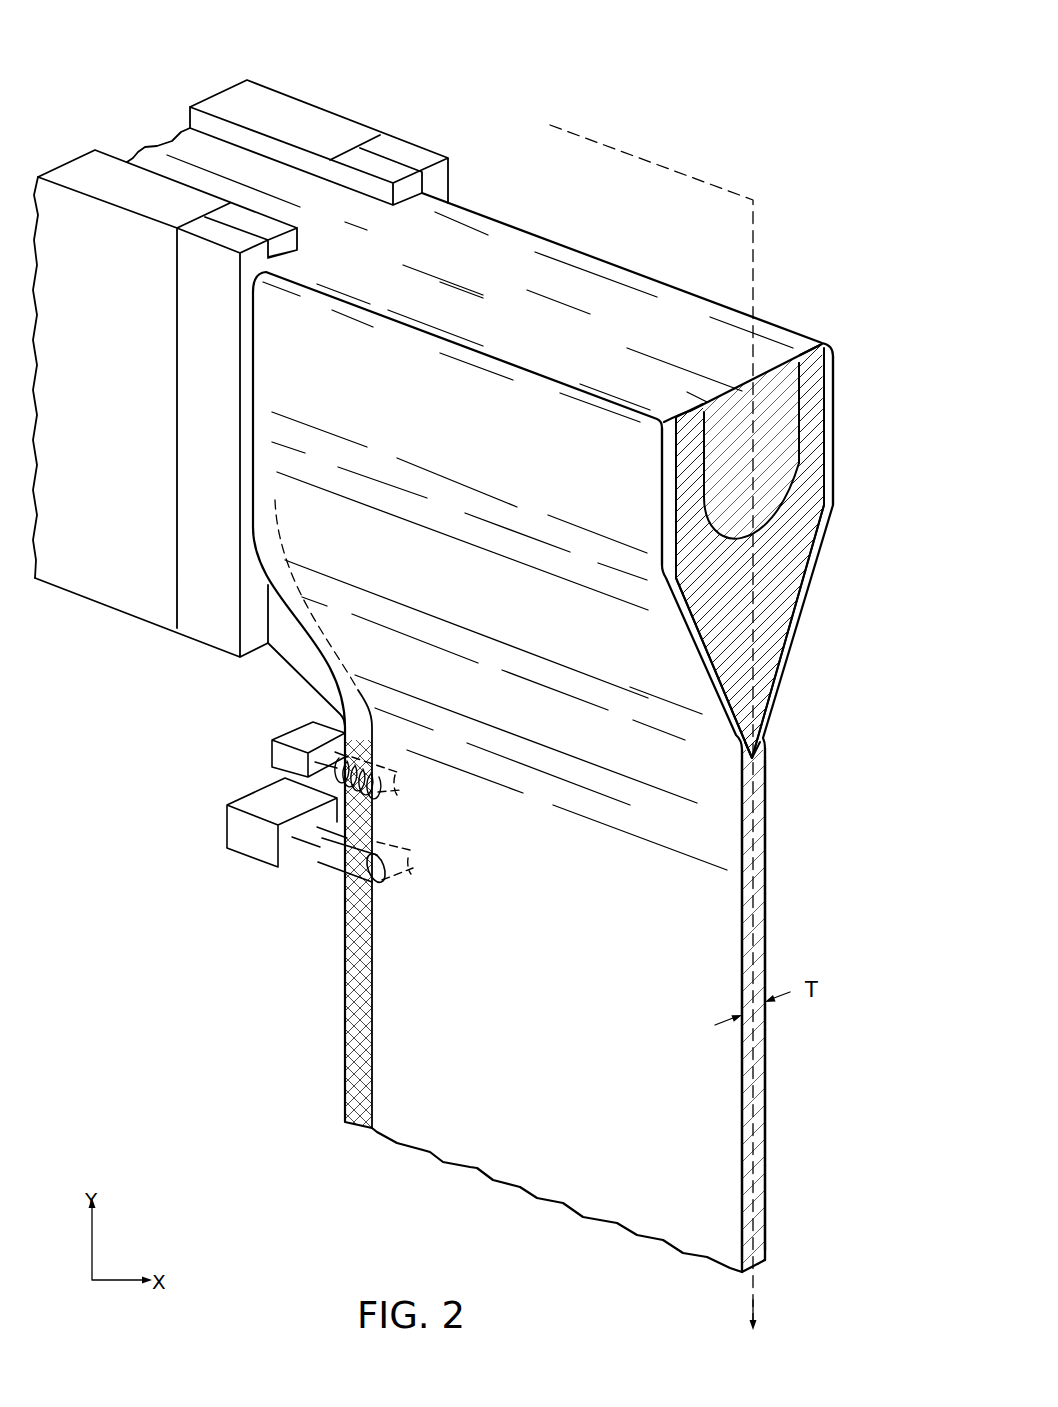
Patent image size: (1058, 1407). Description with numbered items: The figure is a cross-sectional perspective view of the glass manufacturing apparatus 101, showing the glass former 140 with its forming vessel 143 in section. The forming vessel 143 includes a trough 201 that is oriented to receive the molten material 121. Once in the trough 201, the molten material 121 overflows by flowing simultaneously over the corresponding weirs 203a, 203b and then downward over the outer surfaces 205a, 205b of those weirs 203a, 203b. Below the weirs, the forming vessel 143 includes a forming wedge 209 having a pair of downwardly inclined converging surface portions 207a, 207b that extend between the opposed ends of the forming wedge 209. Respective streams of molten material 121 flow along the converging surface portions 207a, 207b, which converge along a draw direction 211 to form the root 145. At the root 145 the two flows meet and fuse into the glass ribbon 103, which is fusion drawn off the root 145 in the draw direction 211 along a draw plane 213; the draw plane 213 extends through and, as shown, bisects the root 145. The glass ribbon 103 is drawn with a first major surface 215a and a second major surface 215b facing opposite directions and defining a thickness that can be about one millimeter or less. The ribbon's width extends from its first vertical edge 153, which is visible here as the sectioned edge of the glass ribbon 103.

The glass manufacturing apparatus 101 is at (832, 95).
The glass former 140 is at (858, 168).
The forming vessel 143 is at (808, 285).
The draw plane 213 is at (753, 220).
The weir 203a is at (690, 423).
The weir 203b is at (807, 367).
The outer surface 205a is at (673, 487).
The outer surface 205b is at (832, 407).
The molten material 121 is at (787, 425).
The trough 201 is at (790, 460).
The forming wedge 209 is at (790, 558).
The downwardly inclined converging surface portion 207a is at (723, 700).
The downwardly inclined converging surface portion 207b is at (783, 677).
The root 145 is at (755, 758).
The glass ribbon 103 is at (727, 890).
The first major surface 215a is at (742, 940).
The second major surface 215b is at (767, 910).
The first vertical edge 153 is at (345, 1000).
The draw direction 211 is at (753, 1298).